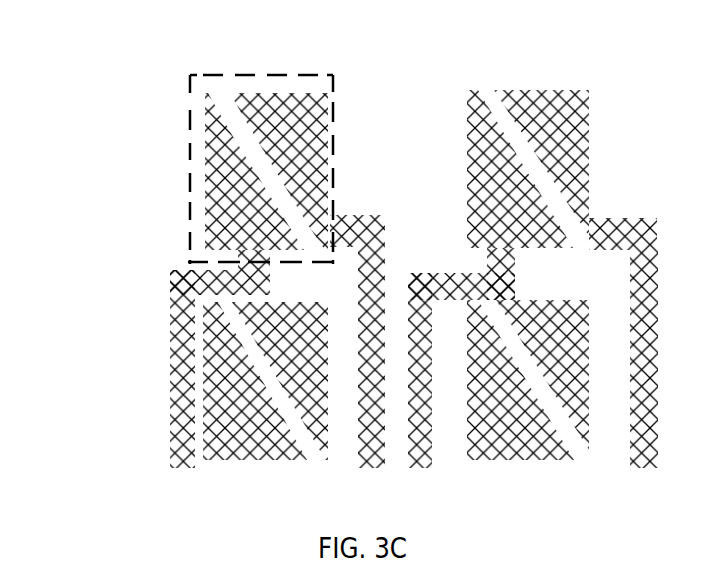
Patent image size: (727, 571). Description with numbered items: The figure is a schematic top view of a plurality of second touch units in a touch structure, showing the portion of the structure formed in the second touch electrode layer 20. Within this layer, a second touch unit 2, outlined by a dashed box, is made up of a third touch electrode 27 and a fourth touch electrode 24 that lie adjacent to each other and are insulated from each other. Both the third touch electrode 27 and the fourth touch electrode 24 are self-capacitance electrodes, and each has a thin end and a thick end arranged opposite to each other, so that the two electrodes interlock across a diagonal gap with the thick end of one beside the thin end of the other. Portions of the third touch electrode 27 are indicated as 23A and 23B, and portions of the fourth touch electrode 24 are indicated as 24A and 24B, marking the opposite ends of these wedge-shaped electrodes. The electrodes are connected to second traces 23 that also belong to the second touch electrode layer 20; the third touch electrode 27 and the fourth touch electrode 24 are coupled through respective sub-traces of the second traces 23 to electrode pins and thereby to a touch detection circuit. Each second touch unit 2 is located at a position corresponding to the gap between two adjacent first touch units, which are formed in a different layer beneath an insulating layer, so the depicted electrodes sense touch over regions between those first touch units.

The second touch electrode layer 20 is at (662, 35).
The second touch unit 2 is at (238, 75).
The second traces 23 is at (372, 215).
The first portion of first electrode 23A is at (213, 102).
The second portion of first electrode 23B is at (332, 250).
The fourth touch electrode 24 is at (270, 131).
The first portion of second electrode 24A is at (325, 246).
The second portion of second electrode 24B is at (282, 97).
The third touch electrode 27 is at (212, 164).